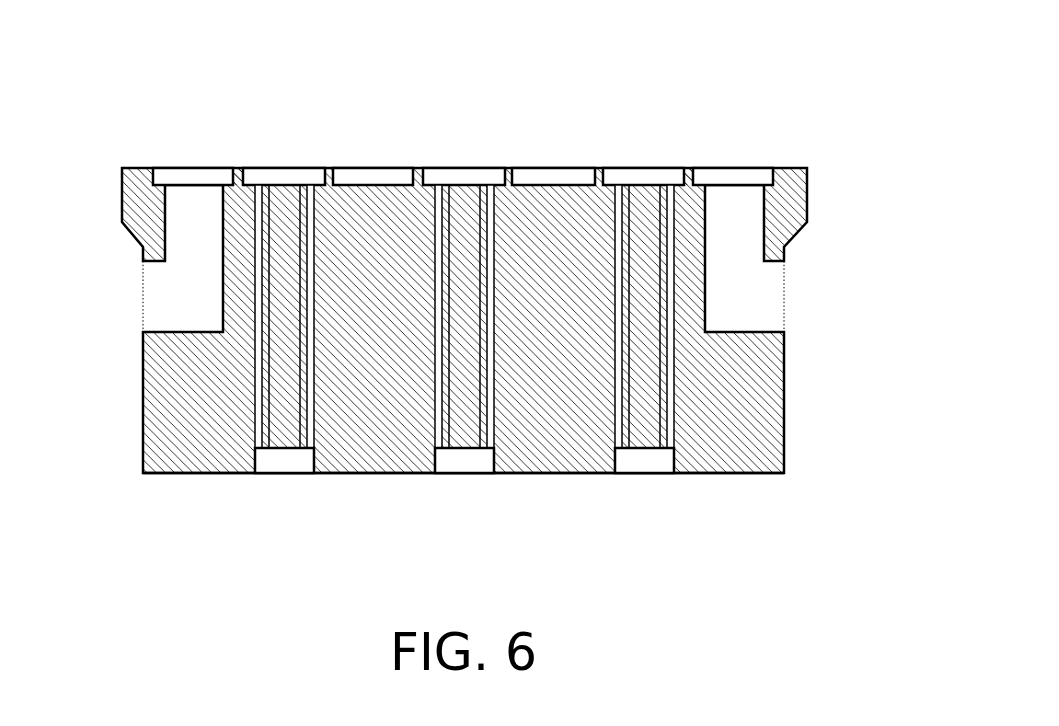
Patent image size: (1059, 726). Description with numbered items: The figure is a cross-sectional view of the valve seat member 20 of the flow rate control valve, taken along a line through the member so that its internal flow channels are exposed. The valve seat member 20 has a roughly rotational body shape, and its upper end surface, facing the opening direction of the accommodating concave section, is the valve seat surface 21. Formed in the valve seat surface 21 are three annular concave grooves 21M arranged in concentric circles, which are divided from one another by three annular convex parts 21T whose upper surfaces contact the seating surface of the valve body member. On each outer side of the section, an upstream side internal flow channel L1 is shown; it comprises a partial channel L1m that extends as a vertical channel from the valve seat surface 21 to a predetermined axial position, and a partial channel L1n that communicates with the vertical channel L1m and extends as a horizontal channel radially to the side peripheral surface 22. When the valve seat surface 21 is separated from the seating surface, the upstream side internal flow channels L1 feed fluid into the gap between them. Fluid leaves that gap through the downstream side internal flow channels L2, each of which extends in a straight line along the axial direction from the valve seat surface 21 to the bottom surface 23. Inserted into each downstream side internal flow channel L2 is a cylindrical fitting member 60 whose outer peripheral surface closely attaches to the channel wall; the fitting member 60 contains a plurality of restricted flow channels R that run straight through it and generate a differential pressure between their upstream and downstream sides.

The valve seat member 20 is at (758, 63).
The valve seat surface 21 is at (419, 183).
The annular concave groove 21M is at (187, 178).
The annular convex part 21T is at (236, 178).
The side peripheral surface 22 is at (143, 420).
The bottom surface 23 is at (730, 474).
The fitting member 60 is at (287, 184).
The upstream side internal flow channel L1 is at (46, 245).
The partial channel (vertical channel) L1m is at (186, 230).
The partial channel (horizontal channel) L1n is at (158, 300).
The downstream side internal flow channel L2 is at (290, 462).
The restricted flow channel R is at (305, 437).